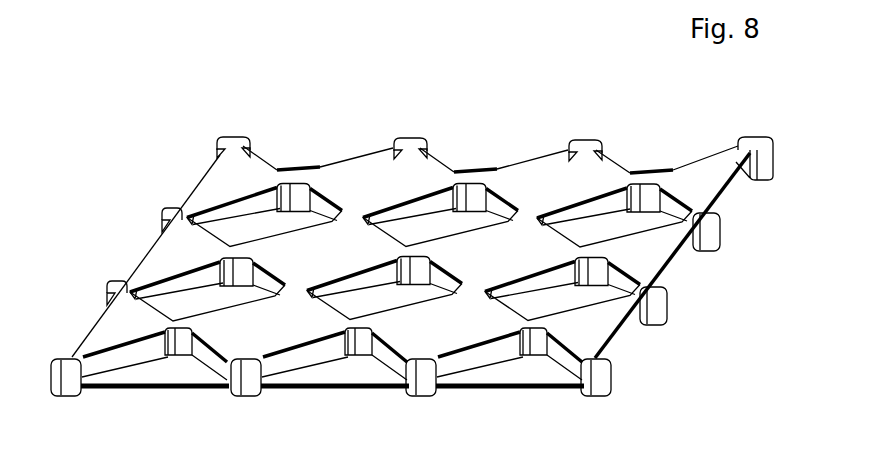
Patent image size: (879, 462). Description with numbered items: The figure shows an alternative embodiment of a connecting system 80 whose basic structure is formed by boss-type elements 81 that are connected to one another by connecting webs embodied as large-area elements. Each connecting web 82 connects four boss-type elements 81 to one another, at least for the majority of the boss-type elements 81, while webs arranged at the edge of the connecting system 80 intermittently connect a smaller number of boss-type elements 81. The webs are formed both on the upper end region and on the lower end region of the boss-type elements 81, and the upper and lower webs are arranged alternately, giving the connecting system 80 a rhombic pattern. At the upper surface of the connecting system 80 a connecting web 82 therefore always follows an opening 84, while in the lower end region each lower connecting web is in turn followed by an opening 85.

The connecting system 80 is at (196, 128).
The boss-type element 81 is at (299, 185).
The connecting web 82 is at (363, 176).
The opening 84 is at (452, 187).
The opening 85 is at (297, 360).